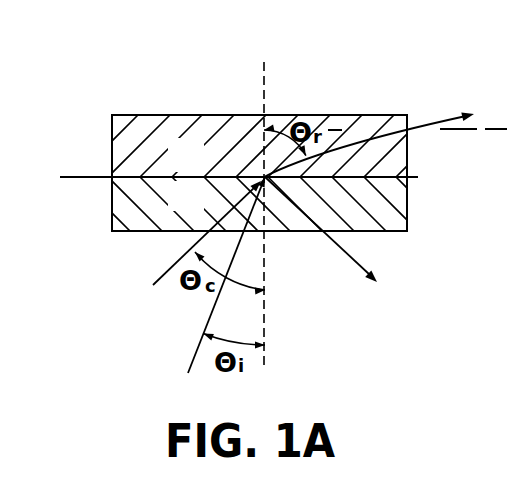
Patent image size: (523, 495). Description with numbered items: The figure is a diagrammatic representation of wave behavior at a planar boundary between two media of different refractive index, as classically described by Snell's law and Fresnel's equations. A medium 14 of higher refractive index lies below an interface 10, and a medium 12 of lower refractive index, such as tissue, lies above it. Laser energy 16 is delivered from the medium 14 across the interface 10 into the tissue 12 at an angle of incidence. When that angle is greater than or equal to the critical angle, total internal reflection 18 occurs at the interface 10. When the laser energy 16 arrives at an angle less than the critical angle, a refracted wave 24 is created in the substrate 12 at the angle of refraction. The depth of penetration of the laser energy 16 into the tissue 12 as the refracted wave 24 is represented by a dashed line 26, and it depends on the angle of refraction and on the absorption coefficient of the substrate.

The interface 10 is at (428, 177).
The medium of lower refractive index 12 is at (118, 150).
The medium of higher refractive index 14 is at (118, 203).
The laser energy 16 is at (191, 361).
The total internal reflection 18 is at (333, 243).
The refracted wave 24 is at (344, 158).
The dashed line 26 is at (498, 129).